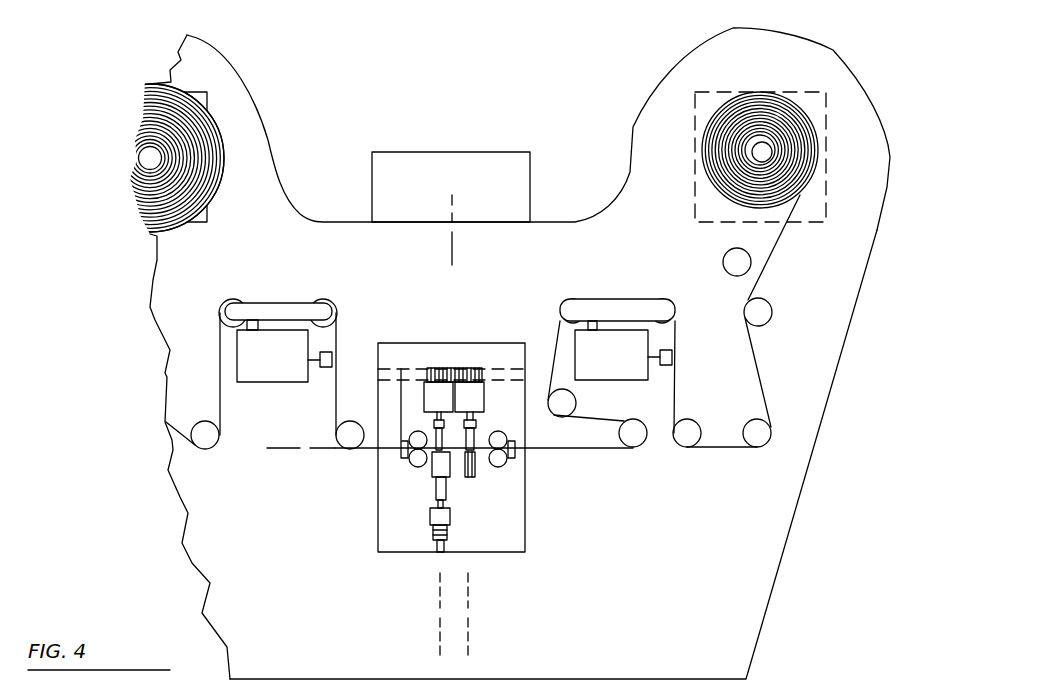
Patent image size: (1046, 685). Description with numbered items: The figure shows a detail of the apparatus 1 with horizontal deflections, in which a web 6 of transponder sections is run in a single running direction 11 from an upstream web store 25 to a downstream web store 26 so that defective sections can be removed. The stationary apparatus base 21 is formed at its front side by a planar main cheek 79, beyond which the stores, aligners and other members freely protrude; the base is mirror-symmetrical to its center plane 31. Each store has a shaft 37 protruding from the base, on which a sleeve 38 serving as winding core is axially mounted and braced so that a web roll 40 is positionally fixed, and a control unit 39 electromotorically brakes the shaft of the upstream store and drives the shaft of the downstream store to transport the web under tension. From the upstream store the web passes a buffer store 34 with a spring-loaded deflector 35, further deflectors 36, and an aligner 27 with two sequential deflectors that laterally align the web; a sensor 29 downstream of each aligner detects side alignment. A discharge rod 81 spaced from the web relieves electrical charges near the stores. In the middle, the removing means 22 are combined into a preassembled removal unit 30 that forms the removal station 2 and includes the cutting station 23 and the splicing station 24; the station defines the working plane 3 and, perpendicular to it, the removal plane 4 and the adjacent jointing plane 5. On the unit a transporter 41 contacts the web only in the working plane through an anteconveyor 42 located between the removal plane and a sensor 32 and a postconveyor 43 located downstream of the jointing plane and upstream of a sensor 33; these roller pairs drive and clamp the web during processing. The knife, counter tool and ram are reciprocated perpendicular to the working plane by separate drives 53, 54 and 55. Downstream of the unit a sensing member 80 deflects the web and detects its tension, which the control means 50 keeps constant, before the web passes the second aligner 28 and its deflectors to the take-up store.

The apparatus 1 is at (340, 54).
The removal station 2 is at (538, 550).
The web/working plane 3 is at (300, 447).
The removal plane 4 is at (440, 613).
The jointing plane 5 is at (468, 613).
The web 6 is at (218, 368).
The running direction 11 is at (300, 480).
The apparatus base 21 is at (555, 193).
The removing means 22 is at (528, 328).
The cutting station 23 is at (418, 422).
The splicing station 24 is at (483, 472).
The web store 25 is at (170, 214).
The web store 26 is at (737, 187).
The aligner 27 is at (265, 296).
The aligner 28 is at (613, 296).
The sensor 29 is at (320, 360).
The removal unit 30 is at (358, 536).
The center plane 31 is at (452, 210).
The sensor 32 is at (403, 453).
The sensor 33 is at (515, 452).
The buffer store 34 is at (163, 317).
The deflector 35 is at (770, 318).
The deflector 36 is at (752, 428).
The shaft 37 is at (770, 148).
The sleeve 38 is at (772, 157).
The control unit 39 is at (208, 206).
The web roll 40 is at (710, 130).
The transporter 41 is at (408, 426).
The anteconveyor 42 is at (432, 462).
The postconveyor 43 is at (503, 470).
The control means 50 is at (388, 151).
The drive 53 is at (442, 394).
The drive 54 is at (473, 394).
The drive 55 is at (435, 516).
The main cheek 79 is at (773, 543).
The sensing member 80 is at (633, 447).
The discharge rod 81 is at (733, 258).